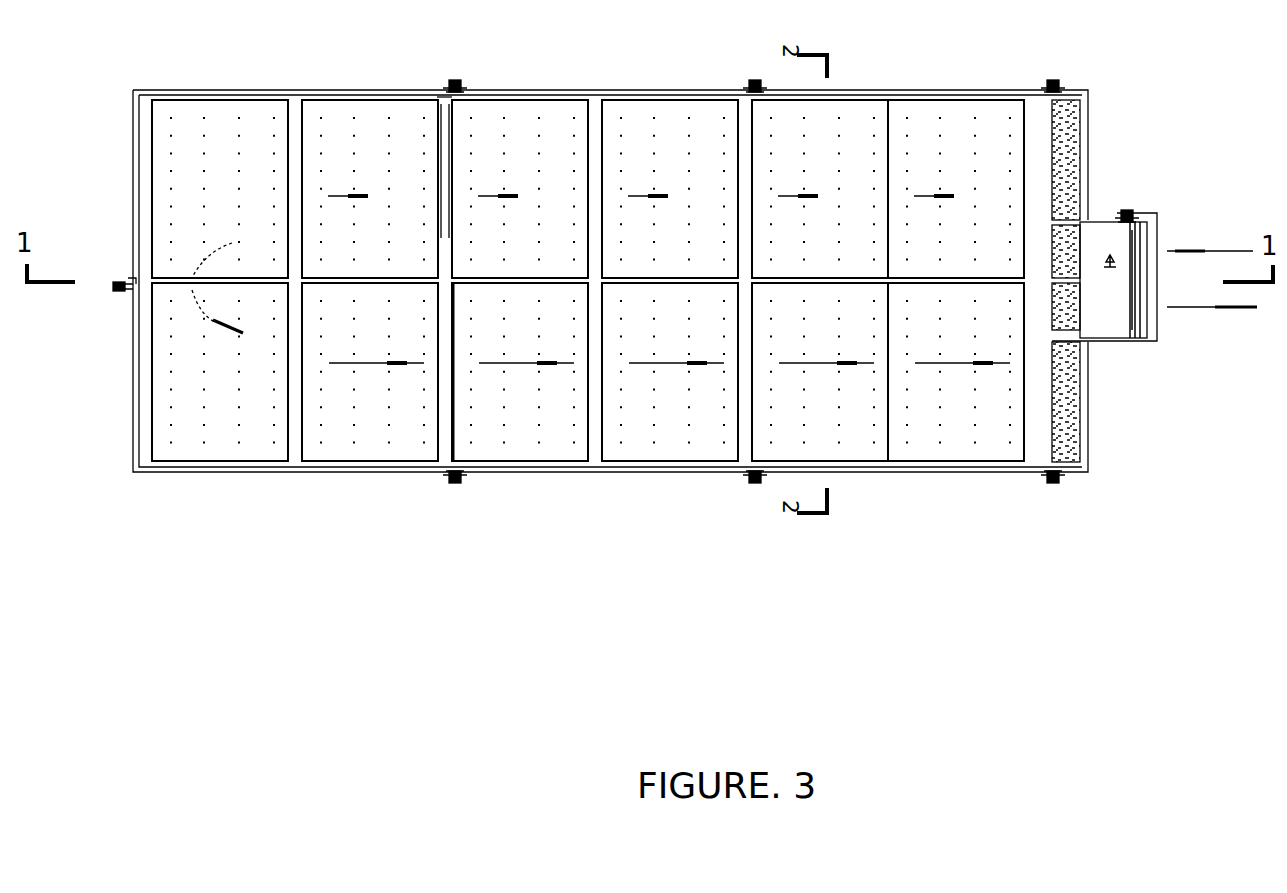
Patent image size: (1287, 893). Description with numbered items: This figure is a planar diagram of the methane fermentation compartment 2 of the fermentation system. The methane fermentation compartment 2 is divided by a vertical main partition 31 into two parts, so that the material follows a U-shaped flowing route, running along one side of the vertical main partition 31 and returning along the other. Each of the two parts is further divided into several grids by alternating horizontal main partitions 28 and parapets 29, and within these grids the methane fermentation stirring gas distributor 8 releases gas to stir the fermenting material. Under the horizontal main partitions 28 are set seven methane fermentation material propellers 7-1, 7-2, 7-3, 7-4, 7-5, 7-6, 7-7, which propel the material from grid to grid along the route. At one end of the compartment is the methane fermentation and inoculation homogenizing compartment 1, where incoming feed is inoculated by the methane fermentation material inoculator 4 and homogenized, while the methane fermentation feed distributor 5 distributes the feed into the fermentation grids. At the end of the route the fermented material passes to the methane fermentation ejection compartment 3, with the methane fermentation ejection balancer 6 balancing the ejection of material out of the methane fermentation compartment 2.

The methane fermentation and inoculation homogenizing compartment 1 is at (1098, 232).
The methane fermentation compartment 2 is at (935, 118).
The methane fermentation ejection compartment 3 is at (1098, 327).
The methane fermentation material inoculator 4 is at (1140, 252).
The methane fermentation feed distributor 5 is at (1078, 128).
The methane fermentation ejection balancer 6 is at (1081, 396).
The methane fermentation material propeller 7-1 is at (1071, 78).
The methane fermentation material propeller 7-2 is at (748, 92).
The methane fermentation material propeller 7-3 is at (450, 147).
The methane fermentation material propeller 7-4 is at (112, 289).
The methane fermentation material propeller 7-5 is at (446, 486).
The methane fermentation material propeller 7-6 is at (748, 486).
The methane fermentation material propeller 7-7 is at (1045, 486).
The methane fermentation stirring gas distributor 8 is at (838, 118).
The horizontal main partition 28 is at (438, 100).
The parapet 29 is at (583, 97).
The vertical main partition 31 is at (150, 272).